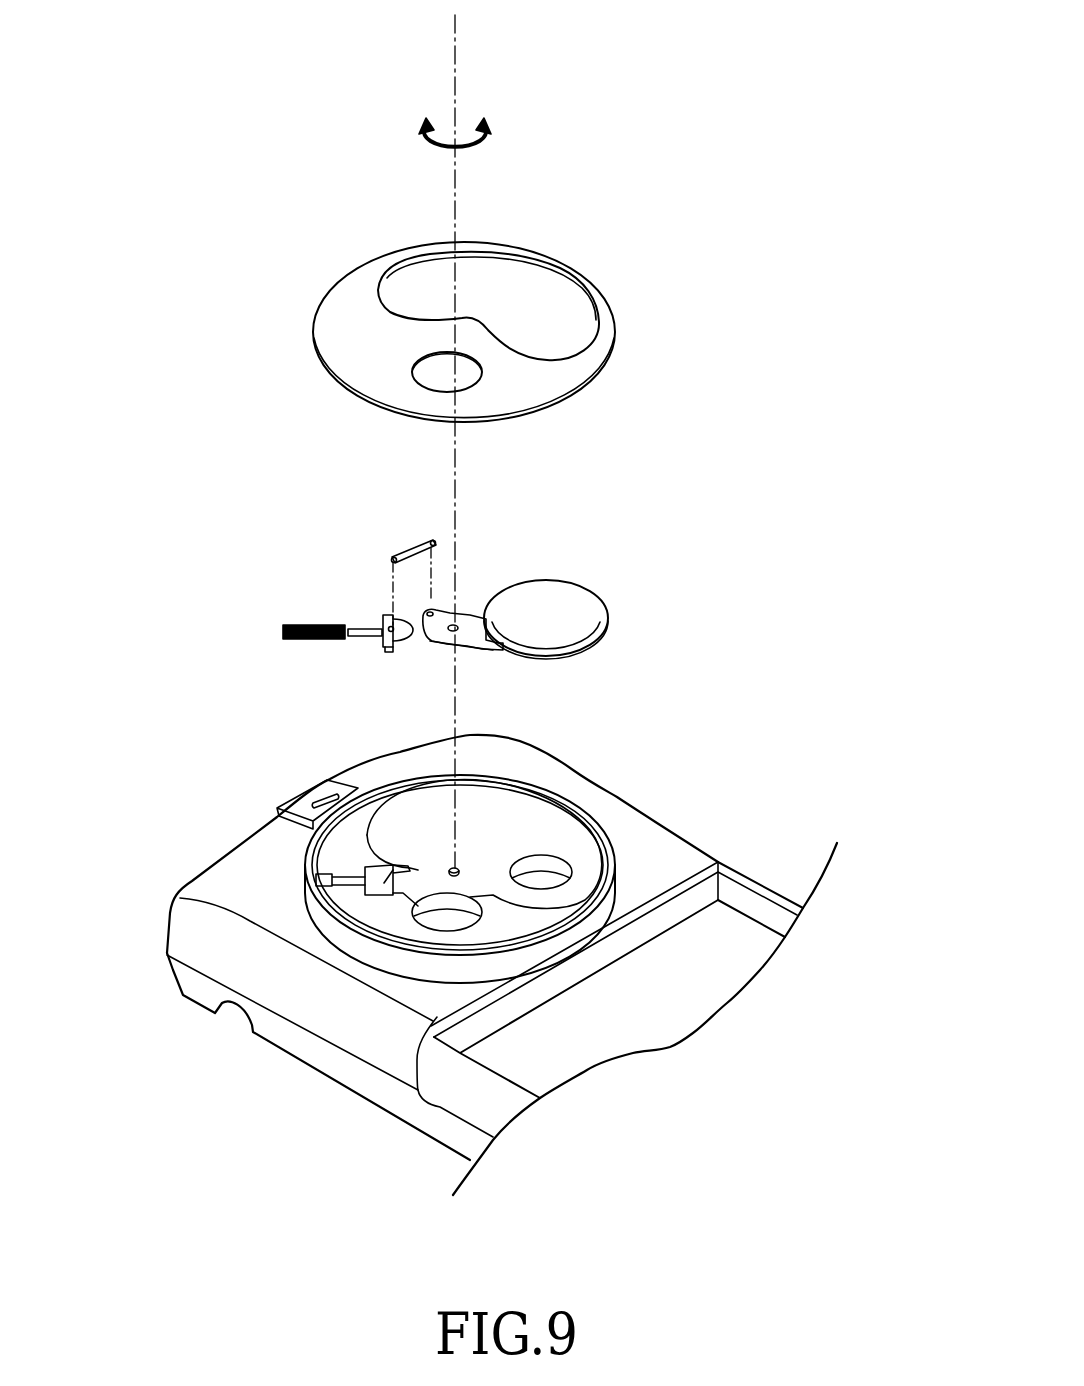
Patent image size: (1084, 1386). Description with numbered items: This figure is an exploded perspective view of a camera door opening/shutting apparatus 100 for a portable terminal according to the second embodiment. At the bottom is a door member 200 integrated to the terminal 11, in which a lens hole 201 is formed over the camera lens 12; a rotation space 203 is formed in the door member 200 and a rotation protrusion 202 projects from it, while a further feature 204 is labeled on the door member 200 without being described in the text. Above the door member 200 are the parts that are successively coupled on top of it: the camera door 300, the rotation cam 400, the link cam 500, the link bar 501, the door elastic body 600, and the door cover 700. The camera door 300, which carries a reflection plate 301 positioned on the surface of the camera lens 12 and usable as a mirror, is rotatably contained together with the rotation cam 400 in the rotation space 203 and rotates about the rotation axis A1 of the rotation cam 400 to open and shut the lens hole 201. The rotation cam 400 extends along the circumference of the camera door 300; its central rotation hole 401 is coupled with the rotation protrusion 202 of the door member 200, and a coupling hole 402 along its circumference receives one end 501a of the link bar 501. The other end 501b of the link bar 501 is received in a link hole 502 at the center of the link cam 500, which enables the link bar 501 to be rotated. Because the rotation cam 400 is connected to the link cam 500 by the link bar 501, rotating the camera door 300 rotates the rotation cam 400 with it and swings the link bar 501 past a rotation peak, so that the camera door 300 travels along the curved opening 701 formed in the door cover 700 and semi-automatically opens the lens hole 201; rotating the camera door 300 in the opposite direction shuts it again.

The rotation axis A1 is at (456, 100).
The camera door opening/shutting apparatus 100 is at (694, 270).
The terminal 11 is at (502, 965).
The camera lens 12 is at (547, 880).
The door member 200 is at (508, 825).
The lens hole 201 is at (561, 850).
The rotation protrusion 202 is at (562, 853).
The rotation space 203 is at (472, 807).
The rotation pin 204 is at (456, 869).
The camera door 300 is at (600, 597).
The reflection plate 301 is at (584, 610).
The rotation cam 400 is at (494, 545).
The rotation hole 401 is at (459, 622).
The coupling hole 402 is at (432, 609).
The link cam 500 is at (351, 654).
The link bar 501 is at (363, 540).
The end of link bar 501a is at (435, 541).
The other end of link bar 501b is at (393, 555).
The link hole 502 is at (387, 652).
The door elastic body 600 is at (282, 632).
The door cover 700 is at (516, 311).
The opening 701 is at (575, 327).